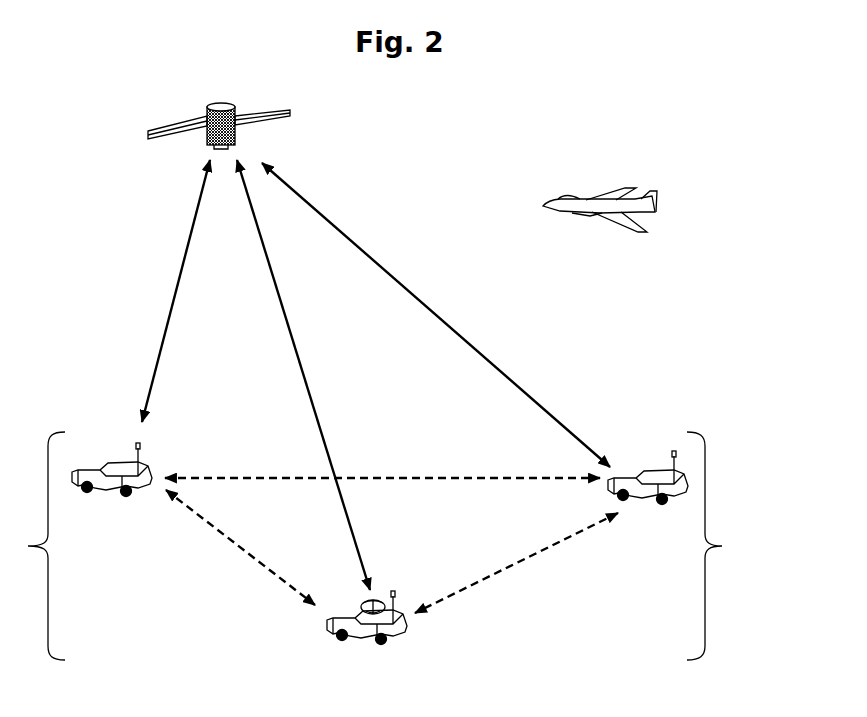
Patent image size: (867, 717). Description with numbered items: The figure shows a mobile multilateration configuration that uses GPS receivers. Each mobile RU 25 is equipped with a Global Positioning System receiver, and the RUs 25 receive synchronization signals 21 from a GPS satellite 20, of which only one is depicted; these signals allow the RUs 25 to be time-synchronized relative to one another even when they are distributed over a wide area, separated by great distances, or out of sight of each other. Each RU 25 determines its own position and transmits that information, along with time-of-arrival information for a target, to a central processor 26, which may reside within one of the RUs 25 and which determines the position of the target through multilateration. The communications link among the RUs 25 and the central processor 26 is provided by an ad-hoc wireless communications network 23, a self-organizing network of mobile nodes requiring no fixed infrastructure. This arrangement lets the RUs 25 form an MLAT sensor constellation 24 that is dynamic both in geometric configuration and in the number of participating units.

The GPS satellite 20 is at (239, 126).
The synchronization signals 21 is at (376, 375).
The ad-hoc wireless communications network 23 is at (391, 529).
The MLAT sensor constellation 24 is at (402, 546).
The mobile RU 25 is at (380, 561).
The central processor 26 is at (356, 599).